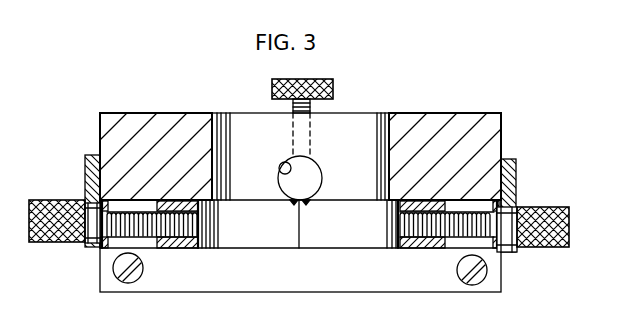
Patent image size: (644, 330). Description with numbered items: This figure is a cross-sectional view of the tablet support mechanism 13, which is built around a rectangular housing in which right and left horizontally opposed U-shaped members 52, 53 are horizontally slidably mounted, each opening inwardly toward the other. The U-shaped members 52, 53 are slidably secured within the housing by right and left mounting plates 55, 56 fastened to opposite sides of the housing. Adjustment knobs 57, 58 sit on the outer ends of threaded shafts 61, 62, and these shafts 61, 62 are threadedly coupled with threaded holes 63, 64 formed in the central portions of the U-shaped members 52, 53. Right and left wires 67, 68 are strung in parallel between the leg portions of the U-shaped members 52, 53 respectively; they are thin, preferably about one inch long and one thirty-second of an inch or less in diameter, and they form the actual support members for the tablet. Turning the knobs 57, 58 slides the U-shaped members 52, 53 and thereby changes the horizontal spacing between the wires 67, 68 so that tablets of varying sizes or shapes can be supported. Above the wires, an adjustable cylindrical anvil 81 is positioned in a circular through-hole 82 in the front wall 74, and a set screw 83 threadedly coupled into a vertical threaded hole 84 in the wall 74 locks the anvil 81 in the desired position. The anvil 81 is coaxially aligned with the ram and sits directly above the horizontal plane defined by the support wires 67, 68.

The tablet support mechanism 13 is at (477, 113).
The right U-shaped member 52 is at (422, 248).
The left U-shaped member 53 is at (120, 250).
The right mounting plate 55 is at (516, 165).
The left mounting plate 56 is at (87, 173).
The adjustment knob 57 is at (560, 207).
The adjustment knob 58 is at (53, 202).
The threaded shaft 61 is at (432, 216).
The threaded shaft 62 is at (165, 218).
The threaded hole 63 is at (456, 216).
The threaded hole 64 is at (147, 220).
The right wire 67 is at (356, 200).
The left wire 68 is at (246, 200).
The front wall 74 is at (247, 118).
The adjustable cylindrical anvil 81 is at (312, 168).
The circular through-hole 82 is at (279, 166).
The set screw 83 is at (328, 82).
The vertical threaded hole 84 is at (315, 138).